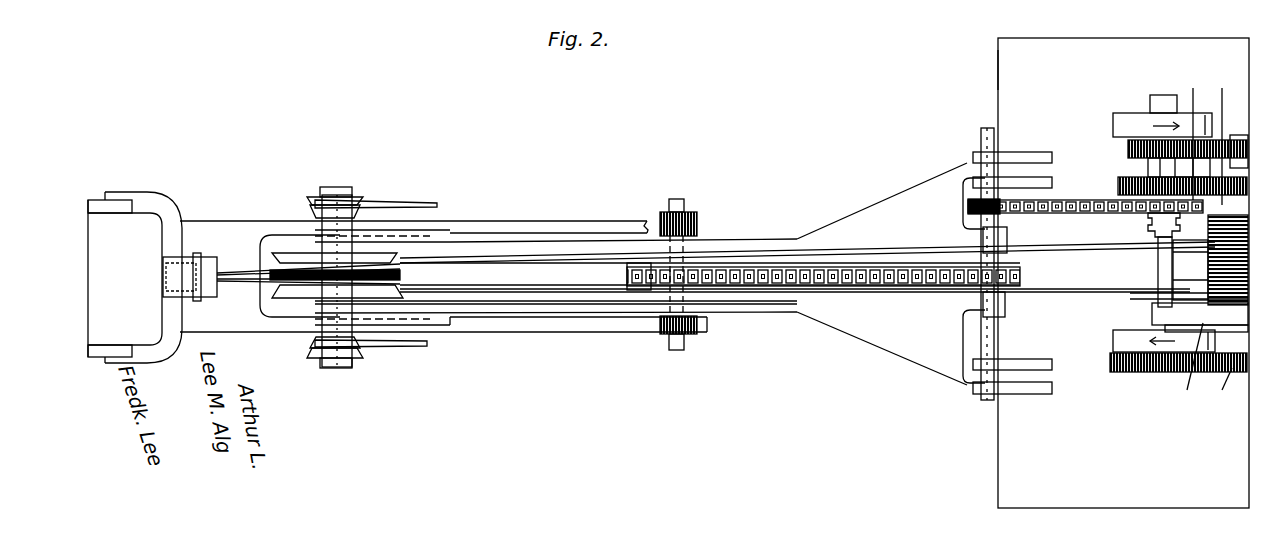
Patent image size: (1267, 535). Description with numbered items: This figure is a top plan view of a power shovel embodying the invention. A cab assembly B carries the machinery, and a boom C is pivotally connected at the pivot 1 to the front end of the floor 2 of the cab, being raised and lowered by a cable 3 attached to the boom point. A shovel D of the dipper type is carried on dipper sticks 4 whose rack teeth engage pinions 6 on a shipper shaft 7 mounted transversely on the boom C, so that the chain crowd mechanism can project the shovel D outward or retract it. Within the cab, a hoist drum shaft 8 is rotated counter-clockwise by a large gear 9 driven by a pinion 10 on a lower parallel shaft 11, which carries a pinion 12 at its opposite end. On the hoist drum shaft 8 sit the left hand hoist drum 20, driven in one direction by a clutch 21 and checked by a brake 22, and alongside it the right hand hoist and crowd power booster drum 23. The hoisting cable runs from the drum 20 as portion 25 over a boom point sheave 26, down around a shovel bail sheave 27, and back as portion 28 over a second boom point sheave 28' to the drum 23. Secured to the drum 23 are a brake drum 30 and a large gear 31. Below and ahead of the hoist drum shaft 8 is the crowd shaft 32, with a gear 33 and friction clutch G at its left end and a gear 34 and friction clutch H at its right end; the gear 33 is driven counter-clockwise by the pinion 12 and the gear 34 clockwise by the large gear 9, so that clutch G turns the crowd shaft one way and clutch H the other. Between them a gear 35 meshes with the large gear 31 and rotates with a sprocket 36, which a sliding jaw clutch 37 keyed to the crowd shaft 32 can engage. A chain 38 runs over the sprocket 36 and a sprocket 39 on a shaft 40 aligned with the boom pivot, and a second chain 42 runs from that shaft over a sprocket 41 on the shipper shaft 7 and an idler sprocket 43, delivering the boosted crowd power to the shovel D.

The pivotal connection 1 is at (986, 135).
The floor 2 is at (998, 67).
The cable 3 is at (408, 203).
The dipper sticks 4 is at (473, 228).
The pinions 6 is at (695, 220).
The shipper shaft 7 is at (678, 350).
The hoist drum shaft 8 is at (1240, 338).
The large gear 9 is at (1183, 147).
The pinion 10 is at (1235, 143).
The lower parallel shaft 11 is at (1247, 343).
The pinion 12 is at (1216, 392).
The hoist drum 20 is at (1150, 296).
The clutch 21 is at (1184, 370).
The brake 22 is at (1150, 313).
The hoist and crowd power booster drum 23 is at (1163, 253).
The hoist cable portion 25 is at (607, 289).
The boom point sheave 26 is at (300, 295).
The shovel bail sheave 27 is at (220, 260).
The cable portion 28 is at (716, 236).
The second boom point sheave 28' is at (333, 227).
The brake drum 30 is at (1223, 135).
The large gear 31 is at (1192, 132).
The crowd shaft 32 is at (1162, 274).
The gear 33 is at (1147, 372).
The gear 34 is at (1127, 150).
The gear 35 is at (1118, 183).
The sprocket 36 is at (1112, 215).
The sliding jaw clutch 37 is at (1148, 232).
The chain 38 is at (1058, 199).
The sprocket 39 is at (967, 205).
The shaft 40 is at (980, 221).
The sprocket 41 is at (713, 267).
The chain 42 is at (777, 268).
The idler sprocket 43 is at (967, 288).
The cab assembly B is at (1029, 37).
The boom C is at (553, 300).
The shovel D is at (130, 228).
The friction clutch G is at (1112, 345).
The friction clutch H is at (1124, 105).